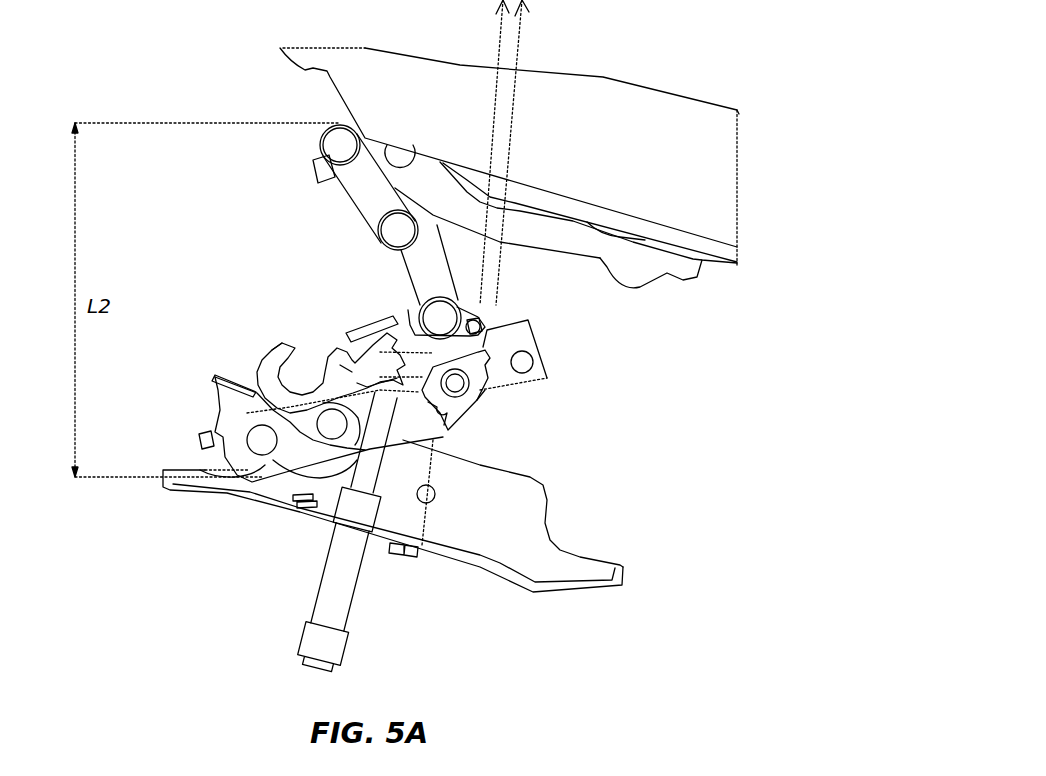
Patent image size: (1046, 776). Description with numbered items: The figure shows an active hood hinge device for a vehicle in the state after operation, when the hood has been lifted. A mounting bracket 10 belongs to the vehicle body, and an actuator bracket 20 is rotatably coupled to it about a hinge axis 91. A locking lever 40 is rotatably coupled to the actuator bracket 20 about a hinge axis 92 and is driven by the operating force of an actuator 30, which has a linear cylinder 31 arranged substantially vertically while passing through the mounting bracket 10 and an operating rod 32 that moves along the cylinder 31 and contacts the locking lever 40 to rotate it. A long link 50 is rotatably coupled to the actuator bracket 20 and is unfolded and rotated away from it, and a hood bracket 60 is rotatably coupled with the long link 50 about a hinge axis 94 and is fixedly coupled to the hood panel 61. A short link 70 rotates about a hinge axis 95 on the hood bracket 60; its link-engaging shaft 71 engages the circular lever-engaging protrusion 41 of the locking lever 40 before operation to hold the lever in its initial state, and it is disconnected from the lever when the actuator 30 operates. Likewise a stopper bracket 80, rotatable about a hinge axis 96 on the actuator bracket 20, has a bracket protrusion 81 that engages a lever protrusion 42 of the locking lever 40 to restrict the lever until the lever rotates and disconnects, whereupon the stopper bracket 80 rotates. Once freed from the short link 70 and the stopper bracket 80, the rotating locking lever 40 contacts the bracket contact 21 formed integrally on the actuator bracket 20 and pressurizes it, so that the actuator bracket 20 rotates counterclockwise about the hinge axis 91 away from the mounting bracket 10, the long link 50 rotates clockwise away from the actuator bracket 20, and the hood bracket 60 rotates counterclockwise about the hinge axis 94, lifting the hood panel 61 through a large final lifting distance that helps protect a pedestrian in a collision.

The mounting bracket 10 is at (465, 533).
The actuator bracket 20 is at (600, 0).
The bracket contact 21 is at (370, 330).
The actuator 30 is at (305, 533).
The linear cylinder 31 is at (348, 607).
The operating rod 32 is at (327, 510).
The locking lever 40 is at (332, 345).
The lever-engaging protrusion 41 is at (268, 347).
The lever protrusion 42 is at (547, 378).
The long link 50 is at (407, 263).
The hood bracket 60 is at (601, 262).
The hood panel 61 is at (660, 110).
The short link 70 is at (353, 199).
The link-engaging shaft 71 is at (362, 245).
The stopper bracket 80 is at (478, 390).
The bracket protrusion 81 is at (418, 553).
The hinge axis 91 is at (262, 440).
The hinge axis 92 is at (200, 445).
The hinge axis 94 is at (399, 148).
The hinge axis 95 is at (327, 146).
The hinge axis 96 is at (463, 400).